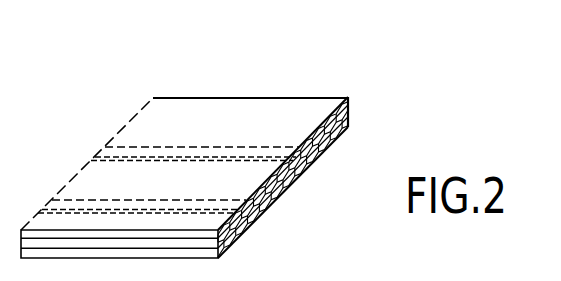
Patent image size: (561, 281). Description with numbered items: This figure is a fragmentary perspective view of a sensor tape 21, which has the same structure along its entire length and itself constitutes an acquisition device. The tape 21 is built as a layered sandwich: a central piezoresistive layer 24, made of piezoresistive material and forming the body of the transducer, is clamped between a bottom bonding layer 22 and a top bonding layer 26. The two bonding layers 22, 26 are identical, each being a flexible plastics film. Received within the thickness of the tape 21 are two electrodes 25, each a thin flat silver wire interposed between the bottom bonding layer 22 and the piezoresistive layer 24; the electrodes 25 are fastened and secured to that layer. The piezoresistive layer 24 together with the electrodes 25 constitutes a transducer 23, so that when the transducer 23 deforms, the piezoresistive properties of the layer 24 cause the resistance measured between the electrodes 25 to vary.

The tape 21 is at (169, 107).
The bottom bonding layer 22 is at (341, 133).
The transducer 23 is at (99, 128).
The piezoresistive layer 24 is at (350, 101).
The electrodes 25 is at (320, 157).
The top bonding layer 26 is at (326, 103).